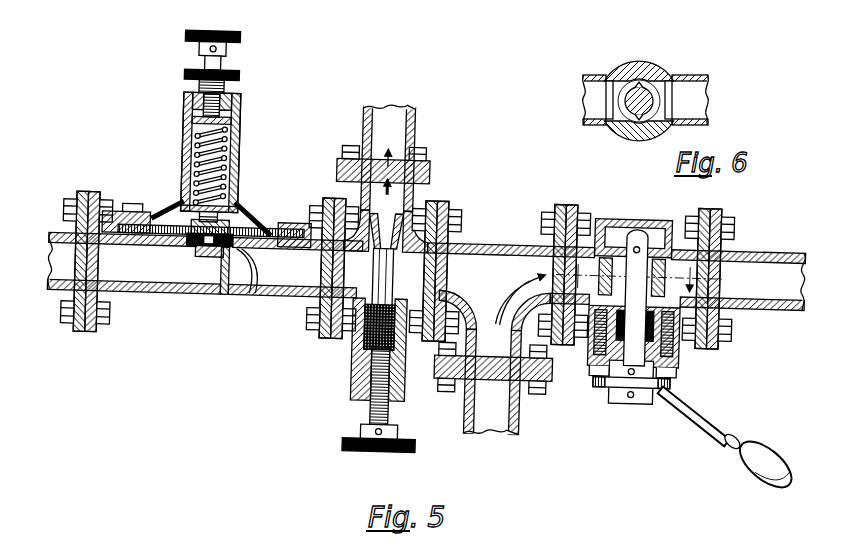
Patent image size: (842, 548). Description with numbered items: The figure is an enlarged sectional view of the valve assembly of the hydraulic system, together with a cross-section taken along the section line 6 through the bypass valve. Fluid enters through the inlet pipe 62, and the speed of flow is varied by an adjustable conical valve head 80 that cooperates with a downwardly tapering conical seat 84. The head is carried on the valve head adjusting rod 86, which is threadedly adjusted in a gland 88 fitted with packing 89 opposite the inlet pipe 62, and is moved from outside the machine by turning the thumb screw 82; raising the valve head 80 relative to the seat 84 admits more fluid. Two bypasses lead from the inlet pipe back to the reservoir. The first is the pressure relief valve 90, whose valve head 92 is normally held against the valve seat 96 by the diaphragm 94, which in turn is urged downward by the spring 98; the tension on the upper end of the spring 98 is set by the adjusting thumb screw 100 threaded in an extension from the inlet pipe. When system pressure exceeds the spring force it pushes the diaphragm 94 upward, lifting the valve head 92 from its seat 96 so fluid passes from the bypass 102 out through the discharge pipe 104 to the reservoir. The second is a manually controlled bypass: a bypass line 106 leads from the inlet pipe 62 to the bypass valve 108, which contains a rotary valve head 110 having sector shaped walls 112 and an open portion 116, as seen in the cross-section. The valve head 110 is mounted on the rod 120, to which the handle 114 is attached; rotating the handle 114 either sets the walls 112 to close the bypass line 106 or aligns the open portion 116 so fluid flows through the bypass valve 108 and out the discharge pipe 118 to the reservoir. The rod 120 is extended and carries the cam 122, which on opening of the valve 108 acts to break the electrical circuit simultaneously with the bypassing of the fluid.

In FIG. 5, the section line 6— 6 is at (639, 278).
In FIG. 5, the inlet pipe 62 is at (380, 120).
In FIG. 5, the conical valve head 80 is at (387, 213).
In FIG. 5, the thumb screw 82 is at (342, 443).
In FIG. 5, the conical seat 84 is at (398, 230).
In FIG. 5, the valve head adjusting rod 86 is at (370, 407).
In FIG. 5, the gland 88 is at (353, 390).
In FIG. 5, the packing 89 is at (357, 340).
In FIG. 5, the pressure relief valve 90 is at (173, 162).
In FIG. 5, the valve head 92 is at (237, 247).
In FIG. 5, the diaphragm 94 is at (250, 228).
In FIG. 5, the valve seat 96 is at (242, 282).
In FIG. 5, the spring 98 is at (228, 155).
In FIG. 5, the adjusting thumb screw 100 is at (240, 35).
In FIG. 5, the bypass 102 is at (298, 273).
In FIG. 5, the discharge pipe 104 is at (157, 277).
In FIG. 5, the bypass line 106 is at (567, 267).
In FIG. 6, the bypass line 106 is at (597, 108).
In FIG. 5, the bypass valve 108 is at (637, 220).
In FIG. 5, the rotary valve head 110 is at (617, 240).
In FIG. 6, the rotary valve head 110 is at (620, 64).
In FIG. 6, the sector shaped walls 112 is at (642, 76).
In FIG. 5, the handle 114 is at (760, 480).
In FIG. 6, the open portion 116 is at (678, 96).
In FIG. 5, the discharge pipe 118 is at (763, 297).
In FIG. 6, the discharge pipe 118 is at (703, 115).
In FIG. 5, the rod 120 is at (652, 237).
In FIG. 5, the cam 122 is at (670, 383).